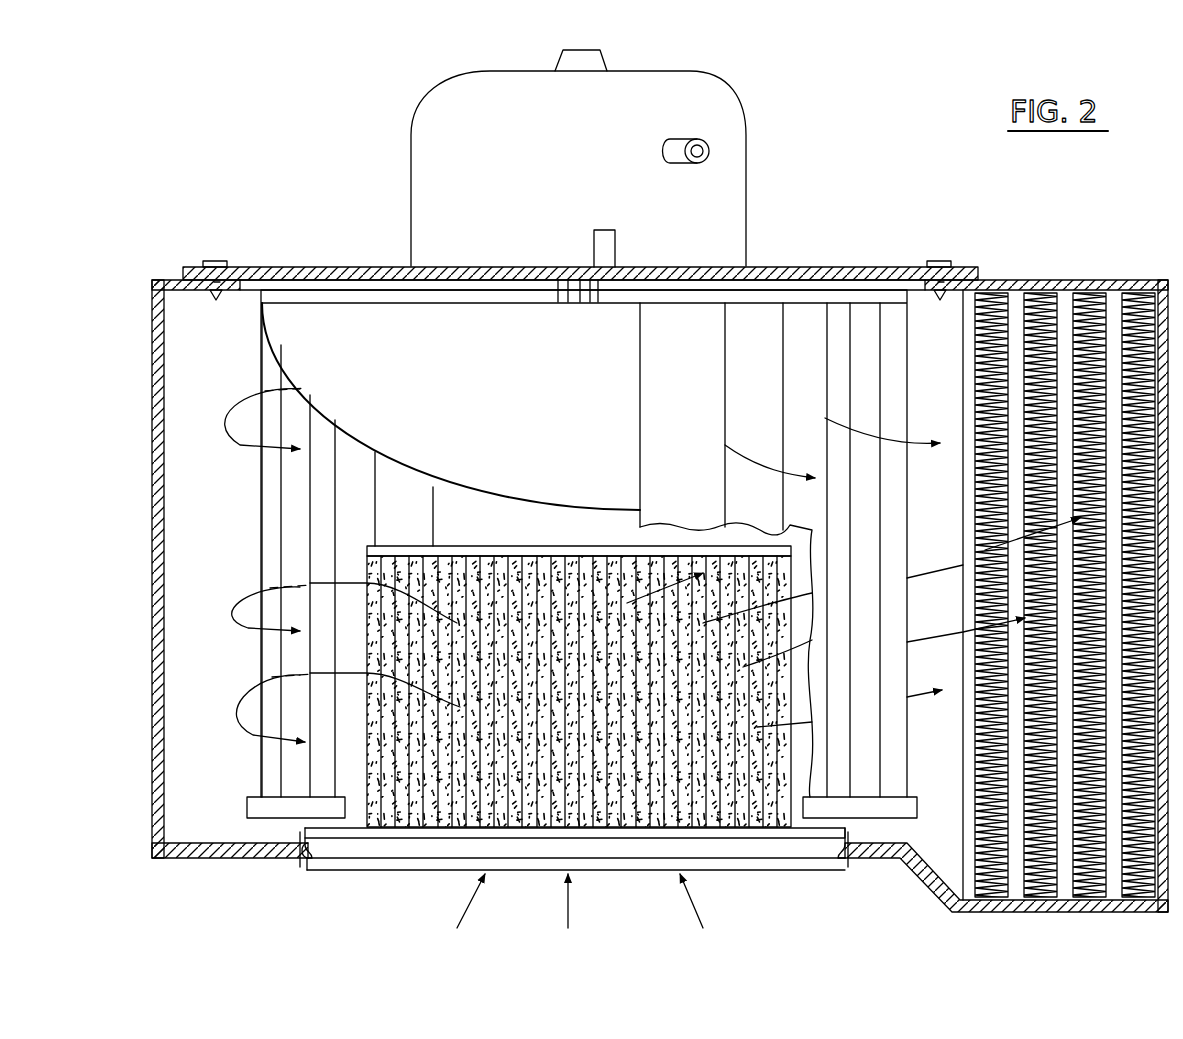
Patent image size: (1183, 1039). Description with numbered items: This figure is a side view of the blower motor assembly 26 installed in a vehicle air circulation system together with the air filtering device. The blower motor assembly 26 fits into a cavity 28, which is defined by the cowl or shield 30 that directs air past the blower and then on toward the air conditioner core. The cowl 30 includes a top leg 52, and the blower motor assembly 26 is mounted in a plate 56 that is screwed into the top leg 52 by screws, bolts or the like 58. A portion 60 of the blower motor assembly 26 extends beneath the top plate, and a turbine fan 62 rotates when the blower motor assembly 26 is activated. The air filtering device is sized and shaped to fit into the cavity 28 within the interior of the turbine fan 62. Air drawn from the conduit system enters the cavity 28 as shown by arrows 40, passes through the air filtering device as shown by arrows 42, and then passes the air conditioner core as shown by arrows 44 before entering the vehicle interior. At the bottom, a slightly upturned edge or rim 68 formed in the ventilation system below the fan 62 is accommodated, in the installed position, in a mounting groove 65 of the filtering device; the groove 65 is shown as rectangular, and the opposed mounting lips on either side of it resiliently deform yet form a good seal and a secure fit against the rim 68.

The blower motor assembly 26 is at (411, 148).
The cavity 28 is at (229, 384).
The cowl 30 is at (150, 354).
The arrows 40 is at (556, 900).
The arrows 42 is at (250, 592).
The arrows 44 is at (942, 642).
The top leg 52 is at (172, 281).
The plate 56 is at (322, 267).
The screws 58 is at (206, 261).
The portion of the blower motor assembly 60 is at (528, 416).
The turbine fan 62 is at (290, 520).
The mounting groove 65 is at (318, 872).
The upturned rim 68 is at (290, 860).